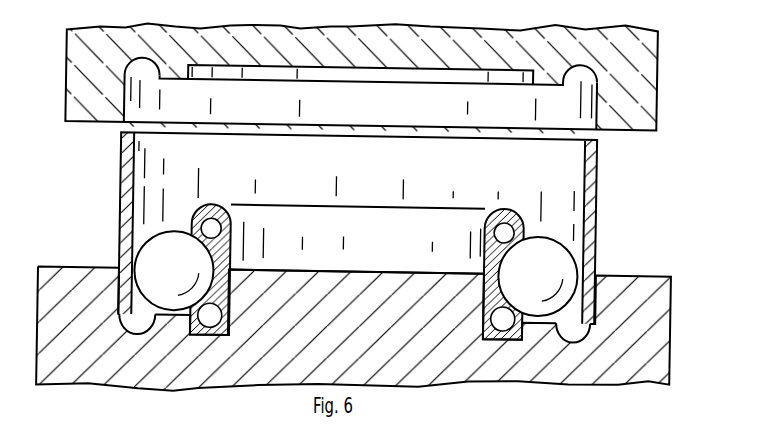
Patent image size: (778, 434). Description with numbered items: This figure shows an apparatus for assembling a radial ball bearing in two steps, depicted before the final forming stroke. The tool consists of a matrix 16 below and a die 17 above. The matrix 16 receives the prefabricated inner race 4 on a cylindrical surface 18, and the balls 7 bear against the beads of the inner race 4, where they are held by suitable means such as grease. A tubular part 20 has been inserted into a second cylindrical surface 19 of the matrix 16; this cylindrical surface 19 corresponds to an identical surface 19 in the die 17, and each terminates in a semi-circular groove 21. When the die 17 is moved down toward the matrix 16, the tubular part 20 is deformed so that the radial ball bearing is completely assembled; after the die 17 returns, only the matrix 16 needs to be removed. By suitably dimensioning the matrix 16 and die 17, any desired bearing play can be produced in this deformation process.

The inner race 4 is at (483, 240).
The balls 7 is at (550, 239).
The matrix 16 is at (665, 280).
The die 17 is at (645, 40).
The cylindrical surface 18 is at (484, 289).
The second cylindrical surface 19 is at (595, 93).
The tubular part 20 is at (596, 174).
The semi-circular groove 21 is at (577, 54).